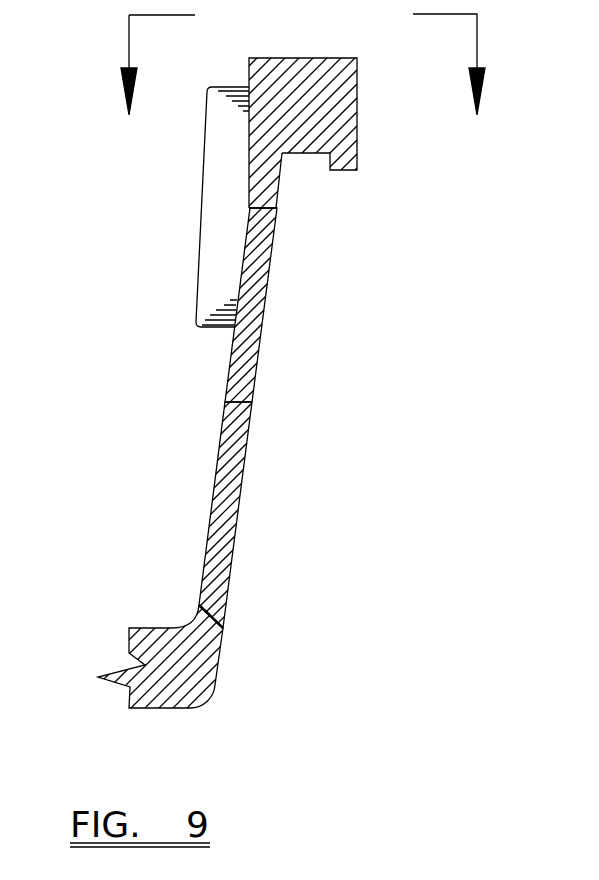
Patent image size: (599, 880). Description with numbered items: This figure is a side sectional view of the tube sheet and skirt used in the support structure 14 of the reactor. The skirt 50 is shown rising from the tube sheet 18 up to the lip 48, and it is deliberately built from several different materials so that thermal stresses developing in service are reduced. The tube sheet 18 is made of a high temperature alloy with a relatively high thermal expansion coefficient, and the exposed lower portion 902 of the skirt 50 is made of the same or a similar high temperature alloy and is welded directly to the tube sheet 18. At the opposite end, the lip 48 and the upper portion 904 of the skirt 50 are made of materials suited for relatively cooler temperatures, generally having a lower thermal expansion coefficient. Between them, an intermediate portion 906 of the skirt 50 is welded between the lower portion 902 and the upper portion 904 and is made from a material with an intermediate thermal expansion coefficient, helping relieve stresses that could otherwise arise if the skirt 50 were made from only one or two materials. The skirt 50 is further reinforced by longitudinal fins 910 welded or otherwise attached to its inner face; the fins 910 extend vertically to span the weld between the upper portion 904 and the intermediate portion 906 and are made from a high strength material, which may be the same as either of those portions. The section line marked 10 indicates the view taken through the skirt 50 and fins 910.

The section line 10- 10 is at (306, 64).
The support structure 14 is at (487, 397).
The tube sheet 18 is at (140, 638).
The lip 48 is at (327, 120).
The skirt 50 is at (223, 418).
The lower portion 902 is at (222, 590).
The upper portion 904 is at (268, 190).
The intermediate portion 906 is at (265, 305).
The longitudinal fins 910 is at (207, 163).